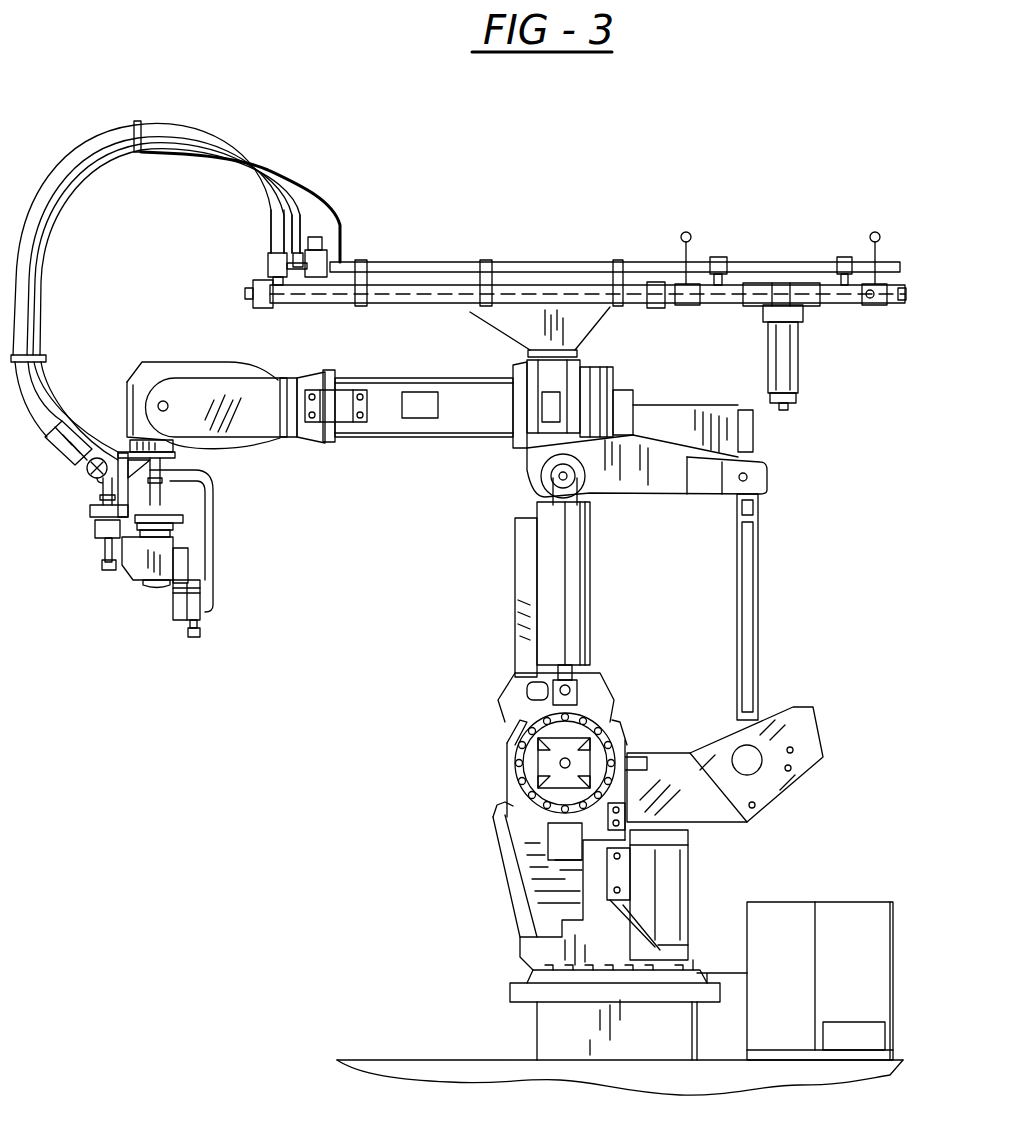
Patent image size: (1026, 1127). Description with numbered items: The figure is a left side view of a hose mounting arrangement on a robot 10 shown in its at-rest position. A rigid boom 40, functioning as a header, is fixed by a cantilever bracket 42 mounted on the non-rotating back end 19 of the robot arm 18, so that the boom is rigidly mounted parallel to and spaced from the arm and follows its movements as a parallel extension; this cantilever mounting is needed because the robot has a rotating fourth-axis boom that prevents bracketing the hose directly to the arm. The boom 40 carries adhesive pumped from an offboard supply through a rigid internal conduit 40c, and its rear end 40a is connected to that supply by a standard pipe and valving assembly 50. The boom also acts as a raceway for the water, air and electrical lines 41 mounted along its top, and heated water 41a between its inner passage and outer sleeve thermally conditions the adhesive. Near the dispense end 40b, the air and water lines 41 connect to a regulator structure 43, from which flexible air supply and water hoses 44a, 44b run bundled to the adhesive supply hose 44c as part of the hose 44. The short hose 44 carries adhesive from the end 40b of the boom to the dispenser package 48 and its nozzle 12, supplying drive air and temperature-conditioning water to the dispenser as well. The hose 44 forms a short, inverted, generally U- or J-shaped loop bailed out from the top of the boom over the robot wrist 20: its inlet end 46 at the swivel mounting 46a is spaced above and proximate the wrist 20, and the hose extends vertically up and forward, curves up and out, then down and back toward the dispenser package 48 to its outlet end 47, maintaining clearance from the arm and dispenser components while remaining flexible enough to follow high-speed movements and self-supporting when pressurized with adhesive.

The robot 10 is at (515, 626).
The nozzle 12 is at (198, 630).
The robot arm 18 is at (395, 388).
The non-rotating back end 19 is at (583, 378).
The robot wrist 20 is at (175, 392).
The boom 40 is at (575, 285).
The rear end 40a is at (652, 282).
The dispense end 40b is at (253, 300).
The rigid internal conduit 40c is at (507, 293).
The water, air and electrical lines 41 is at (420, 262).
The heated water 41a is at (705, 283).
The cantilever bracket 42 is at (587, 316).
The regulator structure 43 is at (322, 278).
The hose 44 is at (95, 133).
The air supply hose 44a is at (294, 212).
The water hose 44b is at (340, 228).
The adhesive supply hose 44c is at (207, 140).
The inlet end 46 is at (272, 254).
The swivel mounting 46a is at (273, 264).
The outlet end 47 is at (52, 437).
The dispenser package 48 is at (240, 536).
The pipe and valving assembly 50 is at (826, 327).